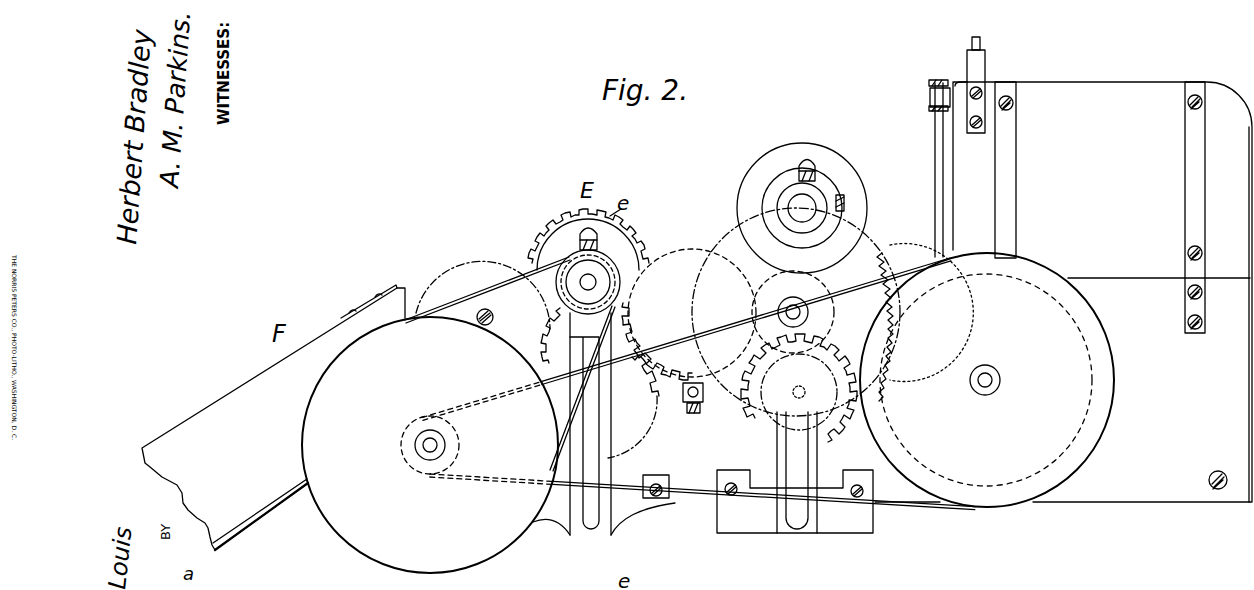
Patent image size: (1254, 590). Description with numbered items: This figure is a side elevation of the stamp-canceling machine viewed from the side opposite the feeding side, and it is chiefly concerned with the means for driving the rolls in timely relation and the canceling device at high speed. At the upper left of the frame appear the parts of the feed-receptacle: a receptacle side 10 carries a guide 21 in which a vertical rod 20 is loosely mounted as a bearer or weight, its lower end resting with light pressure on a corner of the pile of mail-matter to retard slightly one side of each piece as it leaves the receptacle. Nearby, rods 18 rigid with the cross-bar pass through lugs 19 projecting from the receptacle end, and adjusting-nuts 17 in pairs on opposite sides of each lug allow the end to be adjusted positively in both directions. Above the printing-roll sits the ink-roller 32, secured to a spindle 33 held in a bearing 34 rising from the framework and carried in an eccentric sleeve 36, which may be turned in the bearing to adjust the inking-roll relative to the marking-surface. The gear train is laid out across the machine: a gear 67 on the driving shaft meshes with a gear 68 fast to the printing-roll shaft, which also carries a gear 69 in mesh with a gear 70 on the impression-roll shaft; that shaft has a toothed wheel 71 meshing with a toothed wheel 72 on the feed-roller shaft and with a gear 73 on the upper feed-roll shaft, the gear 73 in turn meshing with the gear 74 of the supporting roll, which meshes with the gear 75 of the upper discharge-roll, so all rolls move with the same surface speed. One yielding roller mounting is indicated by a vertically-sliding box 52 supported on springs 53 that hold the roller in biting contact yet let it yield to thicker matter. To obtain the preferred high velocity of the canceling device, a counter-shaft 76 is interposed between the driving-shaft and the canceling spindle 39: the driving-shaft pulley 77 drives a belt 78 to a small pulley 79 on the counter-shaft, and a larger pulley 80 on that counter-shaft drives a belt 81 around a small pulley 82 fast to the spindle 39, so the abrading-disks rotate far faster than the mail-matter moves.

The receptacle side 10 is at (1063, 292).
The adjusting-nuts 17 is at (929, 82).
The rods 18 is at (935, 160).
The lugs 19 is at (930, 97).
The vertical rod 20 is at (981, 43).
The guide 21 is at (986, 62).
The ink-roller 32 is at (801, 143).
The spindle 33 is at (798, 219).
The bearing 34 is at (795, 192).
The eccentric sleeve 36 is at (826, 204).
The spindle 39 is at (588, 292).
The vertically-sliding box 52 is at (703, 400).
The springs 53 is at (692, 414).
The gear 67 is at (898, 337).
The gear 68 is at (884, 278).
The gear 69 is at (792, 284).
The gear 70 is at (773, 386).
The toothed wheel 71 is at (742, 426).
The toothed wheel 72 is at (903, 250).
The gear 73 is at (685, 249).
The gear 74 is at (654, 420).
The gear 75 is at (468, 252).
The counter-shaft 76 is at (418, 444).
The pulley 77 is at (1112, 348).
The belt 78 is at (652, 348).
The small pulley 79 is at (455, 430).
The larger pulley 80 is at (316, 385).
The belt 81 is at (478, 296).
The small pulley 82 is at (603, 258).